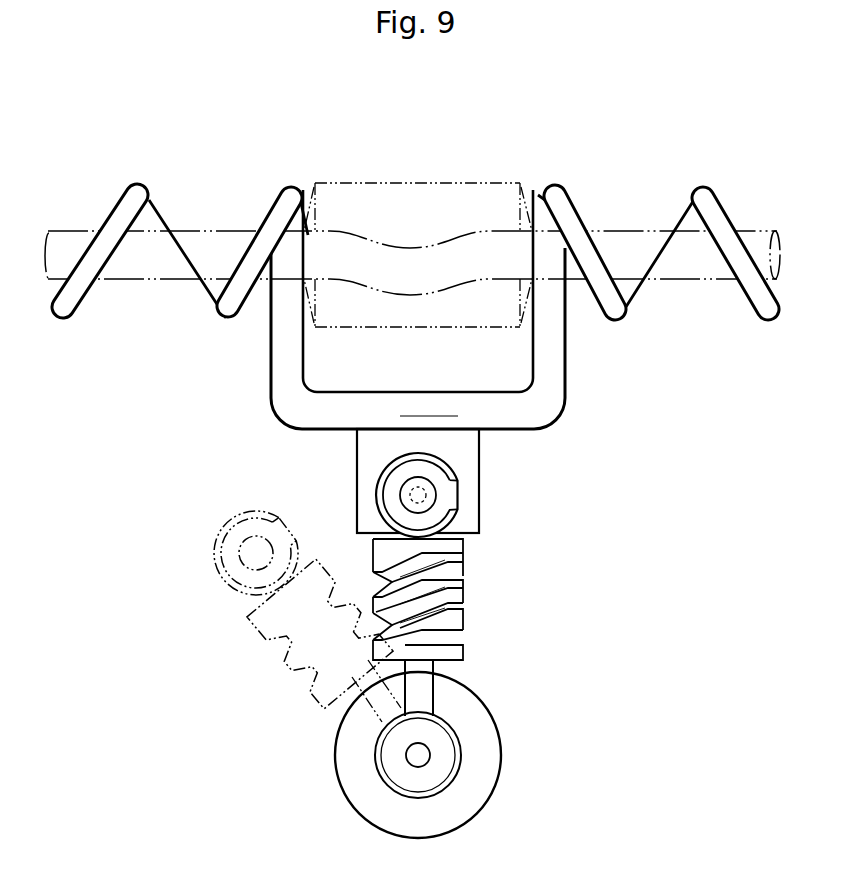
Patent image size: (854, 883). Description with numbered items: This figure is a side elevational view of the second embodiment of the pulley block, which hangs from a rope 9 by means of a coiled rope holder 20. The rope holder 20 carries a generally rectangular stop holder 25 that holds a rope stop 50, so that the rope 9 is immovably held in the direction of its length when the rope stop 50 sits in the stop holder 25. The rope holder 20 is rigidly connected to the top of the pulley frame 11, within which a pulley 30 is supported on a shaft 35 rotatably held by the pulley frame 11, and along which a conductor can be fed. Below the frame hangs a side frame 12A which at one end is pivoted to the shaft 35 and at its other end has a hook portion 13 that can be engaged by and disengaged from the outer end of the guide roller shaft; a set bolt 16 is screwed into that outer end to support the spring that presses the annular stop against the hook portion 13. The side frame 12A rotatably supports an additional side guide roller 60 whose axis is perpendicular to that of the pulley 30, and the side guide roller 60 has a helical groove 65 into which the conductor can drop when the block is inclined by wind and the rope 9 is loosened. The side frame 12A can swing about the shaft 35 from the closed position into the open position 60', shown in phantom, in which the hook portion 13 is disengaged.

The rope 9 is at (750, 231).
The rope holder 20 is at (570, 200).
The rope stop 50 is at (486, 183).
The stop holder 25 is at (445, 392).
The pulley frame 11 is at (479, 465).
The hook portion 13 is at (382, 483).
The set bolt 16 is at (447, 495).
The side guide roller 60 is at (449, 599).
The helical groove 65 is at (445, 598).
The side frame 12A is at (432, 685).
The pulley 30 is at (473, 708).
The shaft 35 is at (424, 755).
The open position 60' is at (310, 634).